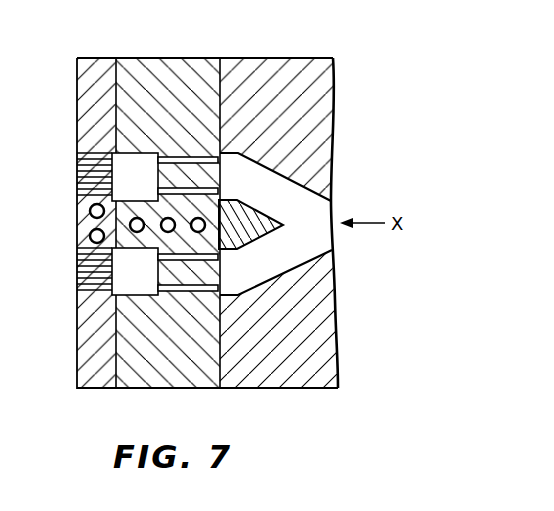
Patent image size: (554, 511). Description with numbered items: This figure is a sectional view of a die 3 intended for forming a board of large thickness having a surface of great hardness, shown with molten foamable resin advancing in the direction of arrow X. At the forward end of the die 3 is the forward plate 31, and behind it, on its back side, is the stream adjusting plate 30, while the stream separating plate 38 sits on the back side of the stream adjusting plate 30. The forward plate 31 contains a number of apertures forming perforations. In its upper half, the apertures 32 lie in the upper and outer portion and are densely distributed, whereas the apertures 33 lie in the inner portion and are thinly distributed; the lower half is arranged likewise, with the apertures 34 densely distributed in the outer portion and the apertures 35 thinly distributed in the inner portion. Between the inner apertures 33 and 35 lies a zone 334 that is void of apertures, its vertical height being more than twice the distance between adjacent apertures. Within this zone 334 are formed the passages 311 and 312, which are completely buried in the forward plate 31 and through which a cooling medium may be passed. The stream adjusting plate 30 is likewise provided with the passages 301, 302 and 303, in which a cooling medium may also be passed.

The die 3 is at (244, 56).
The stream adjusting plate 30 is at (160, 63).
The forward plate 31 is at (97, 67).
The stream separating plate 38 is at (290, 80).
The apertures 32 is at (80, 158).
The apertures 33 is at (80, 190).
The zone void of apertures 334 is at (80, 199).
The passage 311 is at (89, 211).
The passage 312 is at (89, 235).
The apertures 35 is at (80, 262).
The apertures 34 is at (77, 297).
The passage 303 is at (136, 232).
The passage 302 is at (170, 232).
The passage 301 is at (197, 232).